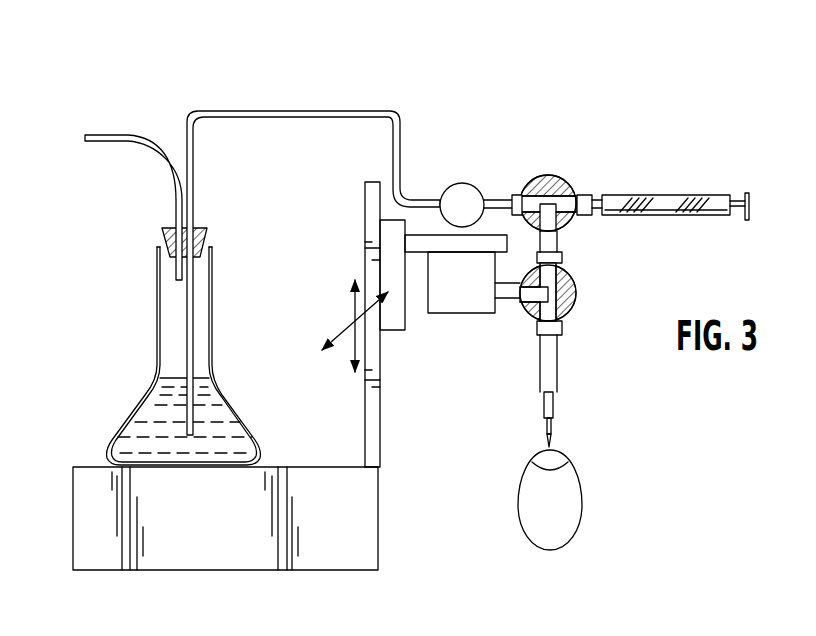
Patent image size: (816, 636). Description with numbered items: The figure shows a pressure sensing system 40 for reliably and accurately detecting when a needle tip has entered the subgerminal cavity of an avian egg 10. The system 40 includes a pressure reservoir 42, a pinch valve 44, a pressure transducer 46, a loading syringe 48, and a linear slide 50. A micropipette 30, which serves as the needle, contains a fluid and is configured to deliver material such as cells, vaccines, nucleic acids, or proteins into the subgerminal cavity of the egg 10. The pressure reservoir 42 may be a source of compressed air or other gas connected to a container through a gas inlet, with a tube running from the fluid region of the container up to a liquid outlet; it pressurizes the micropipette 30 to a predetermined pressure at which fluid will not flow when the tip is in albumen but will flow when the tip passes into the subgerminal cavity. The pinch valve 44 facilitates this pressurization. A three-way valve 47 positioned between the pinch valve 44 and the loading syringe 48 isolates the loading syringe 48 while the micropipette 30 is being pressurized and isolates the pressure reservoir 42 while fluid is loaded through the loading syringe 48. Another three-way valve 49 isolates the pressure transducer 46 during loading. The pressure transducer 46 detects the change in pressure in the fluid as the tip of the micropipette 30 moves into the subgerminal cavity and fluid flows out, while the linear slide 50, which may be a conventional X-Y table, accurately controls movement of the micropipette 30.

The egg 10 is at (574, 527).
The micropipette 30 is at (570, 431).
The pressure sensing system 40 is at (630, 186).
The pressure reservoir 42 is at (113, 350).
The pinch valve 44 is at (469, 183).
The pressure transducer 46 is at (458, 318).
The three-way valve 47 is at (570, 225).
The loading syringe 48 is at (667, 195).
The three-way valve 49 is at (578, 289).
The linear slide 50 is at (365, 268).